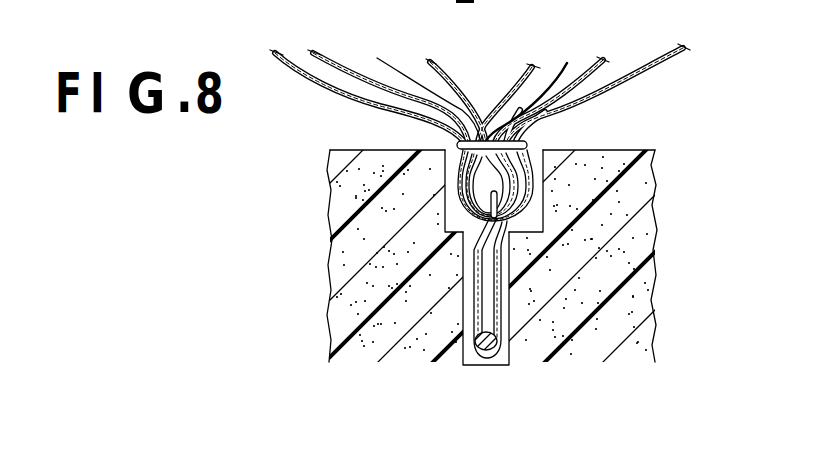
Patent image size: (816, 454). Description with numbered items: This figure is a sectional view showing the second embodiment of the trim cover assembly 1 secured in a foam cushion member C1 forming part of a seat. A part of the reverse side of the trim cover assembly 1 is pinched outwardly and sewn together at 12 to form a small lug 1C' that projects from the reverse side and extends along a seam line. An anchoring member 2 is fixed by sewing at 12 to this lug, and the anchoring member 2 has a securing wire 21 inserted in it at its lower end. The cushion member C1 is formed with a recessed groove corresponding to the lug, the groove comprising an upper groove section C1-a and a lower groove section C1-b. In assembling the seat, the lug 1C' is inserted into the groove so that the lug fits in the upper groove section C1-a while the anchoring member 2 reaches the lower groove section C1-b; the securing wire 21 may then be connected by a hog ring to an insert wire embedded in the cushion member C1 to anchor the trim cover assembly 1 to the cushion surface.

The trim cover assembly 1 is at (641, 77).
The sewn portion 12 is at (532, 146).
The foam cushion member C1 is at (646, 180).
The upper groove section C1-a is at (451, 156).
The lower groove section C1-b is at (504, 340).
The small lug 1C' is at (452, 187).
The anchoring member 2 is at (500, 295).
The securing wire 21 is at (482, 356).